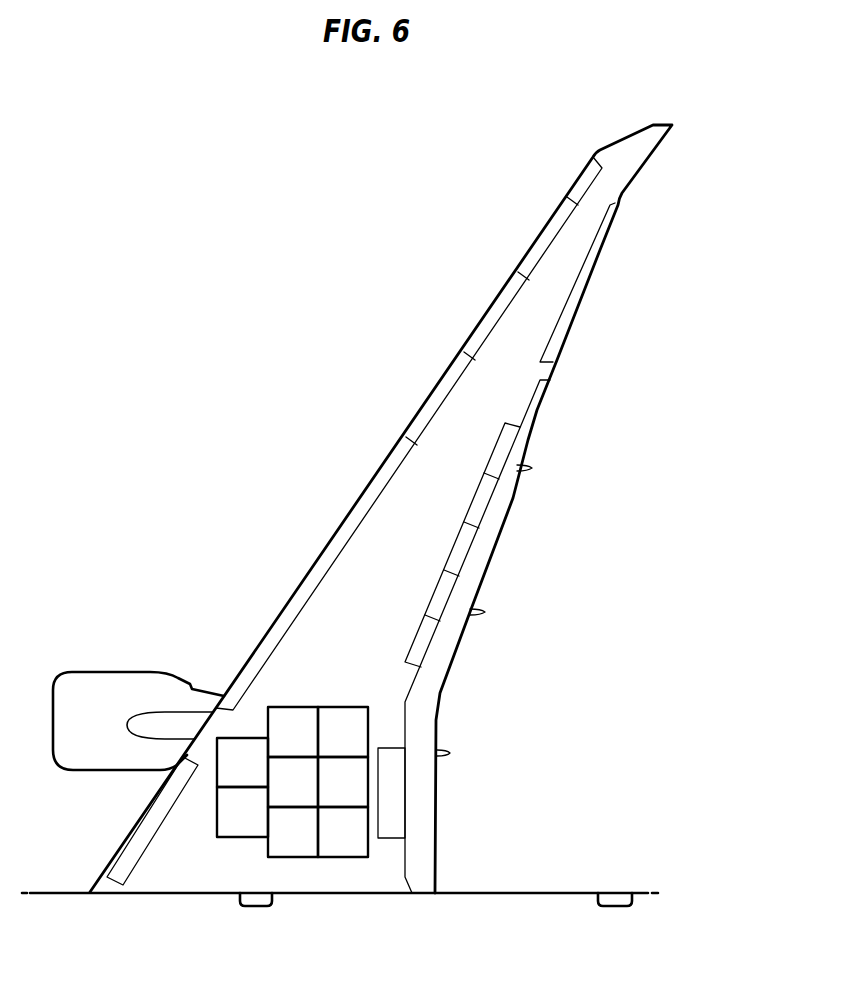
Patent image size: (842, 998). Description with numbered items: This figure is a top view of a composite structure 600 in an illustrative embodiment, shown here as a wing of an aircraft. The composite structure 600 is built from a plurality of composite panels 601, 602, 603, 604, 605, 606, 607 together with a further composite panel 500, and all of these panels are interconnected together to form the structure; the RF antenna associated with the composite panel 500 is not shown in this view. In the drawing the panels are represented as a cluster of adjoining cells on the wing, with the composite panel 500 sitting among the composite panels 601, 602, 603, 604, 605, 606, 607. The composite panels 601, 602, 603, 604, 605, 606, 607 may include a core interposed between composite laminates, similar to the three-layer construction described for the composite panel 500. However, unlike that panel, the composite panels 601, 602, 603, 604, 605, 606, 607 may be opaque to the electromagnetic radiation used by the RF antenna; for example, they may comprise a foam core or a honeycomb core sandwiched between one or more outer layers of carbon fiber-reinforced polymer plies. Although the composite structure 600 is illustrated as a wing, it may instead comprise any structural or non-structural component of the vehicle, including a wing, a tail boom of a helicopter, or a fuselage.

The composite structure 600 is at (187, 210).
The composite panel 601 is at (260, 774).
The composite panel 602 is at (312, 743).
The composite panel 603 is at (362, 743).
The composite panel 604 is at (260, 823).
The composite panel 605 is at (312, 843).
The composite panel 606 is at (362, 843).
The composite panel 607 is at (362, 793).
The composite panel 500 is at (312, 793).